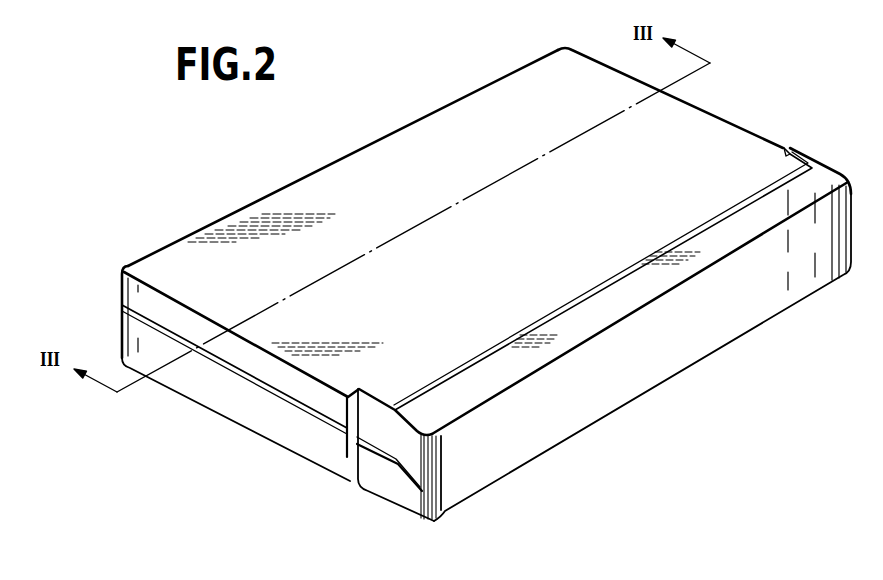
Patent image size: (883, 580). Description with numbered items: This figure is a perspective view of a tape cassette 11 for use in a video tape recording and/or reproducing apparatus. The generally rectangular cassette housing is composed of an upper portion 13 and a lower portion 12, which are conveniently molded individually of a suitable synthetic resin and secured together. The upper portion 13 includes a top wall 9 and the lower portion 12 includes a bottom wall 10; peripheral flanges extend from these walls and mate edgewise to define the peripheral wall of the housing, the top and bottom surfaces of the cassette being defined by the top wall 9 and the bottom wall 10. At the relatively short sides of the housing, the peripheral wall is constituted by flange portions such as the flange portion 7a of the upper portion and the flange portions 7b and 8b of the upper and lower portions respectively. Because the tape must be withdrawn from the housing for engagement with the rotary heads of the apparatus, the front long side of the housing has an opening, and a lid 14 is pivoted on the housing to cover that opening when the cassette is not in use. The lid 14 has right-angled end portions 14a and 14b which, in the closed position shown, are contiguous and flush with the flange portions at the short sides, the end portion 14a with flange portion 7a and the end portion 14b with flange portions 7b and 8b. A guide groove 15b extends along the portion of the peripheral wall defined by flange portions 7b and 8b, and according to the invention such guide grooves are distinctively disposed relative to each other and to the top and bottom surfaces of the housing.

The flange portion 7a is at (750, 128).
The flange portion 7b is at (190, 329).
The flange portion 8b is at (288, 435).
The top wall 9 is at (393, 151).
The bottom wall 10 is at (312, 465).
The cassette 11 is at (297, 181).
The lower portion 12 is at (185, 373).
The upper portion 13 is at (217, 250).
The lid 14 is at (622, 377).
The right-angled end portion 14a is at (868, 156).
The right-angled end portion 14b is at (383, 487).
The guide groove 15b is at (225, 375).